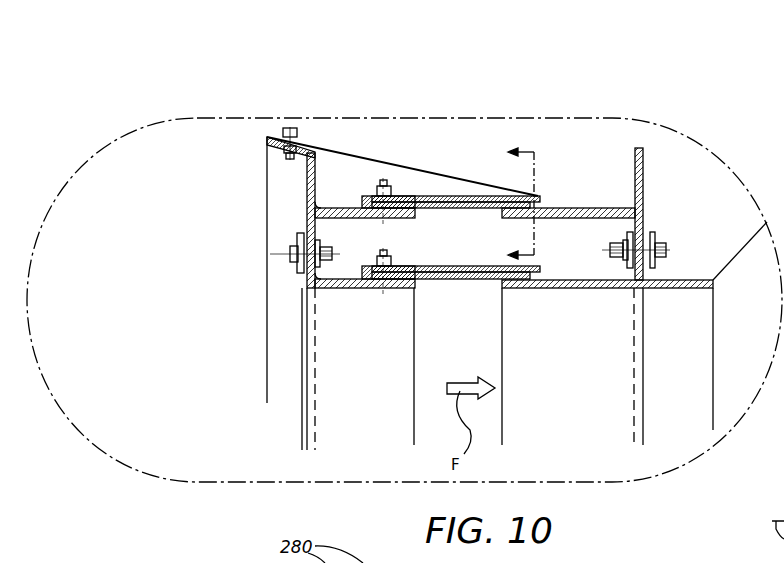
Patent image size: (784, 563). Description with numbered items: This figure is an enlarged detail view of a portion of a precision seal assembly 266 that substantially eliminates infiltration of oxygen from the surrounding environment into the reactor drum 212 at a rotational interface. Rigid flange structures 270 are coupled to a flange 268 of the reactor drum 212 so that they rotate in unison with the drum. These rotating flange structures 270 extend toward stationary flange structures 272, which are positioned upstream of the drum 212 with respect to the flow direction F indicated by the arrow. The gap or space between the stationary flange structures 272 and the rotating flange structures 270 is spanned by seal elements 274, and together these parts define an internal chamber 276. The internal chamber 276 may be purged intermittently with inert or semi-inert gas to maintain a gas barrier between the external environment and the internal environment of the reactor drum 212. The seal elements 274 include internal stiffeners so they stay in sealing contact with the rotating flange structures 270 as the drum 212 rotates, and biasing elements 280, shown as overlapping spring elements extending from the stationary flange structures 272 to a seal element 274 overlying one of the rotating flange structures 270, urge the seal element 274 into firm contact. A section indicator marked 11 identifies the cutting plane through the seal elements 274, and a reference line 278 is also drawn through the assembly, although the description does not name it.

The reactor drum 212 is at (698, 357).
The seal assembly 266 is at (648, 90).
The flange 268 is at (672, 282).
The rigid flange structures 270 is at (648, 217).
The stationary flange structures 272 is at (307, 227).
The seal elements 274 is at (539, 201).
The internal chamber 276 is at (423, 233).
The centerline 278 is at (466, 312).
The biasing elements 280 is at (337, 152).
The section line for FIG. 11 is at (510, 202).